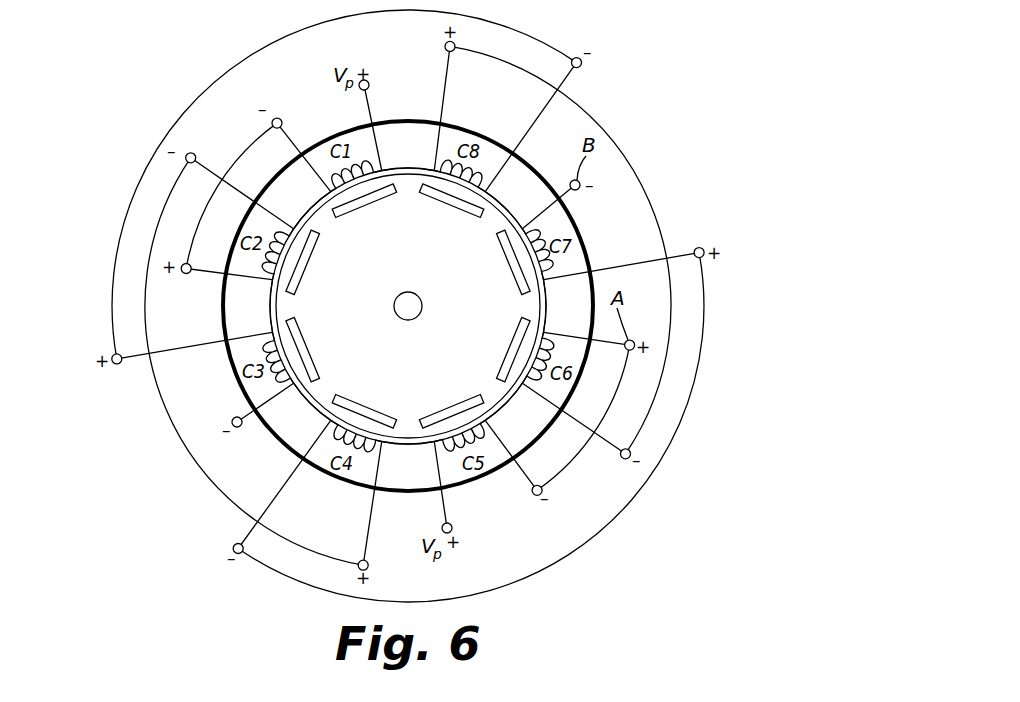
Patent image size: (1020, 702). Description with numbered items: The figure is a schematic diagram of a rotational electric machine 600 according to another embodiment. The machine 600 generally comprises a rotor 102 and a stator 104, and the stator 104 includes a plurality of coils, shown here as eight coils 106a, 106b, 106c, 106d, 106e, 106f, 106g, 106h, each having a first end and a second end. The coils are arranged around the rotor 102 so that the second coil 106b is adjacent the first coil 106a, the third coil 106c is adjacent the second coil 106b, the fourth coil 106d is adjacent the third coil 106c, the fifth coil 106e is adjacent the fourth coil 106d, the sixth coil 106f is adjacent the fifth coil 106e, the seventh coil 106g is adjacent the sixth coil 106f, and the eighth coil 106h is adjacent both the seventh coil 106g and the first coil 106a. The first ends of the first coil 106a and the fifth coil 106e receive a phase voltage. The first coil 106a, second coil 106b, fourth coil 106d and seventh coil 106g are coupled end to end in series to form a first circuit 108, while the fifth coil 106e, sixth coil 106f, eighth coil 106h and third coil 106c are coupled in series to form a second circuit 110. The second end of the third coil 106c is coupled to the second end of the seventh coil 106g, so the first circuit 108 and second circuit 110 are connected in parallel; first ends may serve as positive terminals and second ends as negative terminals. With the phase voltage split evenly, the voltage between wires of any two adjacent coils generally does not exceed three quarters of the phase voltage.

The rotational electric machine 600 is at (612, 35).
The second circuit 110 is at (632, 166).
The first circuit 108 is at (180, 448).
The stator 104 is at (405, 120).
The rotor 102 is at (356, 361).
The first coil 106a is at (405, 156).
The second coil 106b is at (290, 228).
The third coil 106c is at (267, 333).
The fourth coil 106d is at (328, 422).
The fifth coil 106e is at (430, 446).
The sixth coil 106f is at (524, 385).
The seventh coil 106g is at (545, 279).
The eighth coil 106h is at (492, 196).